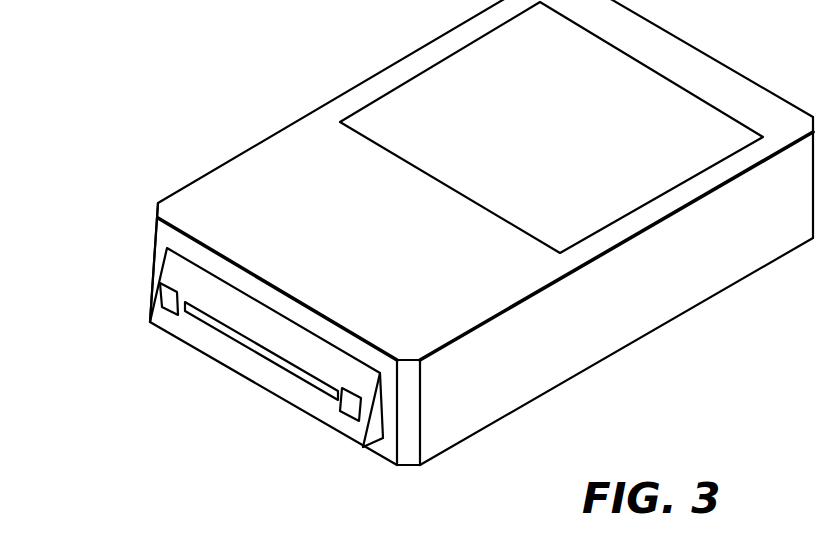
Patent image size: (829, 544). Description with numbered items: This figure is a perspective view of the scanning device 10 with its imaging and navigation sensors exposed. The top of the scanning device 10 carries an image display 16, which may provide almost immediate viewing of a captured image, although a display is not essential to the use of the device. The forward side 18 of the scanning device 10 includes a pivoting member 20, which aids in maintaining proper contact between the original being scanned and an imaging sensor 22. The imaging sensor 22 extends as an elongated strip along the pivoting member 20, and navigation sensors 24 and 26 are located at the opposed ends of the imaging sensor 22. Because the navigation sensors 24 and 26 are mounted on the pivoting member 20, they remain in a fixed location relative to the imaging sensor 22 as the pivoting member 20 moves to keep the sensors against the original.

The scanning device 10 is at (262, 163).
The image display 16 is at (438, 122).
The forward side 18 is at (168, 235).
The pivoting member 20 is at (222, 348).
The imaging sensor 22 is at (298, 375).
The navigation sensor 24 is at (166, 297).
The navigation sensor 26 is at (347, 412).